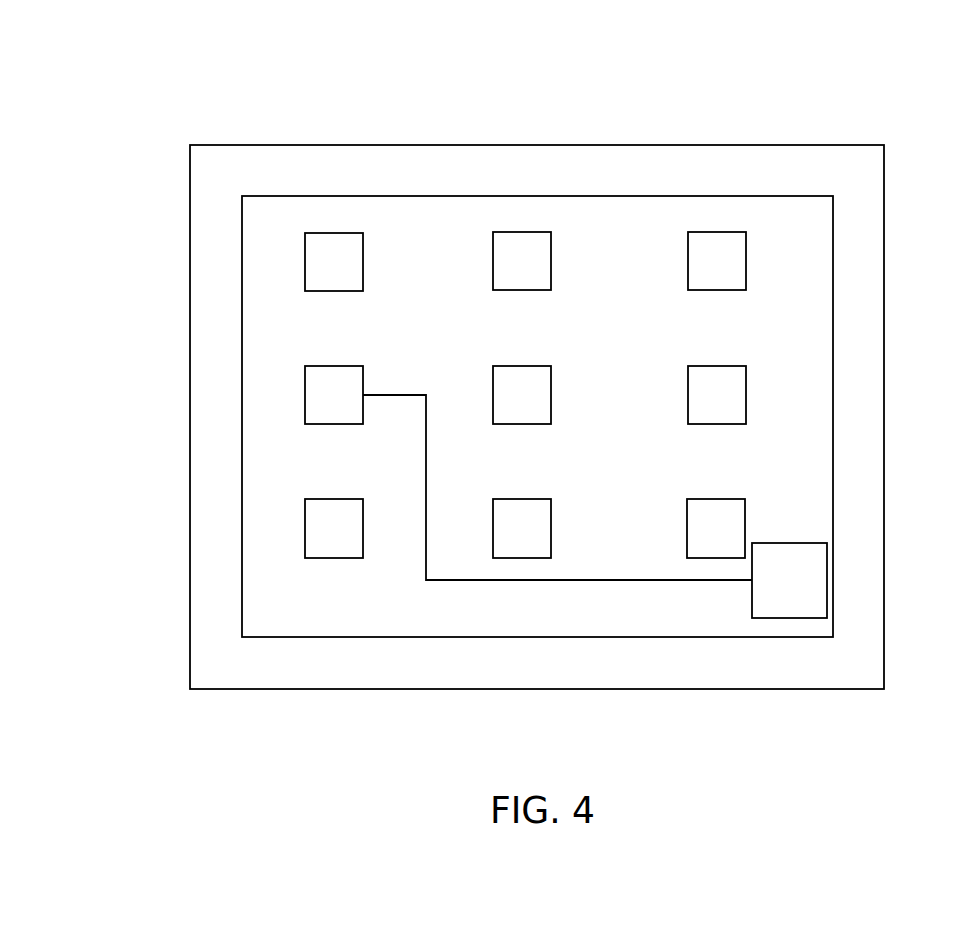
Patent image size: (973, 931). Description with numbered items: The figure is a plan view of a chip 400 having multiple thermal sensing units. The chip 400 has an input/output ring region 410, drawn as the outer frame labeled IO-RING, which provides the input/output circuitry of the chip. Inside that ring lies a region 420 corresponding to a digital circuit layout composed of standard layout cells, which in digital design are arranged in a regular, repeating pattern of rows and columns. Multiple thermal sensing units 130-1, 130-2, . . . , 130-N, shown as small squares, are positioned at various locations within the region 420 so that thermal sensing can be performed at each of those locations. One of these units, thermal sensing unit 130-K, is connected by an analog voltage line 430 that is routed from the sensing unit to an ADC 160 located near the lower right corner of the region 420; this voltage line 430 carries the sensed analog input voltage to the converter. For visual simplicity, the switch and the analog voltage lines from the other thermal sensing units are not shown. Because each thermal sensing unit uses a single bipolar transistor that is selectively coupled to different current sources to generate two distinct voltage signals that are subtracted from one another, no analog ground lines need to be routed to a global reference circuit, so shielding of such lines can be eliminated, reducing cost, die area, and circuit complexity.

The chip 400 is at (99, 127).
The input/output ring region 410 is at (867, 197).
The region 420 is at (810, 335).
The thermal sensing unit 130-1 is at (363, 253).
The thermal sensing unit 130-2 is at (551, 253).
The thermal sensing unit 130-K is at (352, 365).
The thermal sensing unit 130-N is at (700, 499).
The analog voltage line 430 is at (406, 394).
The ADC 160 is at (761, 543).